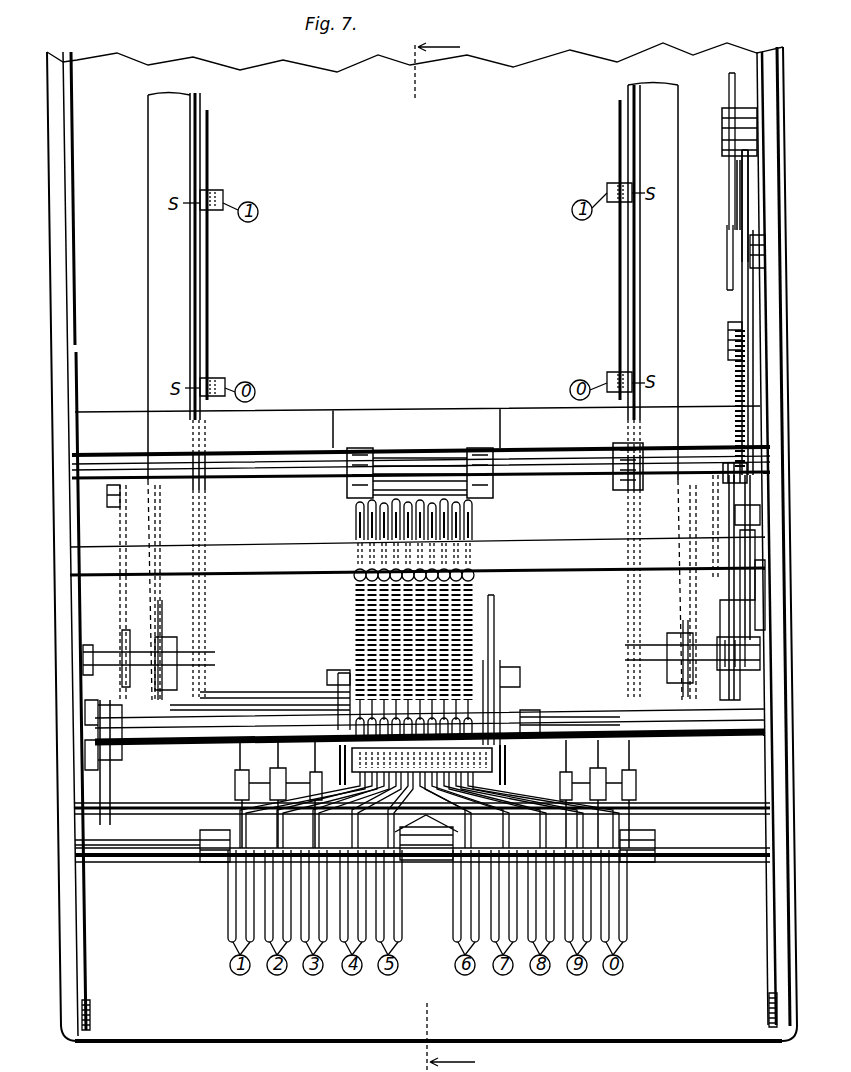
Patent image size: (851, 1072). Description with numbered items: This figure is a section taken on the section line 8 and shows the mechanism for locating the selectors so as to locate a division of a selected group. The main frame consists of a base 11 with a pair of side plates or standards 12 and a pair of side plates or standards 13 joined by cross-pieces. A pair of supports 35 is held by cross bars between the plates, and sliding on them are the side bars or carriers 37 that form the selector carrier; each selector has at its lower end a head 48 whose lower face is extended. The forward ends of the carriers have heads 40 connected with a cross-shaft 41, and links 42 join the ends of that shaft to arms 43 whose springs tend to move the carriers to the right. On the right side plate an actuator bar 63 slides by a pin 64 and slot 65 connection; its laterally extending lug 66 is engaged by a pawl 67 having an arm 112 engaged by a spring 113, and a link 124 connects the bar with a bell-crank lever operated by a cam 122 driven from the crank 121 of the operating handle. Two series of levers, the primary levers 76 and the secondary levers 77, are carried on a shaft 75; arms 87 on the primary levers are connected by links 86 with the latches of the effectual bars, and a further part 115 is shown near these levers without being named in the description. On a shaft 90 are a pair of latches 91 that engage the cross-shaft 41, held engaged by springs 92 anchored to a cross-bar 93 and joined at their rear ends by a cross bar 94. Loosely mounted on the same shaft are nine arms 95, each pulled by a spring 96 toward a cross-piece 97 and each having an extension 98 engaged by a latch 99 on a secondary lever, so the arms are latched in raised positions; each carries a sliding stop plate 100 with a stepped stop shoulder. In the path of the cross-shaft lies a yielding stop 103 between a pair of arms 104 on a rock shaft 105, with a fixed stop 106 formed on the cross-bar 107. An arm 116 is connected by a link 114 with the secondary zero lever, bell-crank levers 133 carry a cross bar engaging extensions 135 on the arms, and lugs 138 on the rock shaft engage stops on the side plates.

The section line 8 is at (452, 555).
The base 11 is at (410, 1027).
The side plates or standards 12 is at (65, 520).
The side plates or standards 13 is at (65, 150).
The supports 35 is at (152, 258).
The side bars or carriers 37 is at (205, 272).
The heads 40 is at (167, 630).
The cross-shaft 41 is at (530, 655).
The links 42 is at (128, 547).
The arms 43 is at (112, 507).
The head 48 is at (209, 150).
The actuator bar 63 is at (729, 90).
The pin 64 is at (730, 228).
The slot 65 is at (725, 130).
The lug 66 is at (762, 252).
The pawl 67 is at (750, 212).
The shaft 75 is at (167, 863).
The primary levers 76 is at (400, 918).
The secondary levers 77 is at (270, 926).
The links 86 is at (240, 783).
The arms 87 is at (262, 778).
The shaft 90 is at (225, 720).
The latches 91 is at (355, 598).
The springs 92 is at (345, 763).
The cross-bar 93 is at (165, 805).
The cross bar 94 is at (520, 702).
The arms 95 is at (360, 525).
The springs 96 is at (348, 620).
The cross-piece 97 is at (310, 548).
The extension 98 is at (453, 862).
The latch 99 is at (225, 873).
The stop plate 100 is at (401, 470).
The yielding stop 103 is at (467, 492).
The arms 104 is at (345, 490).
The rock shaft 105 is at (293, 473).
The fixed stop 106 is at (420, 458).
The cross-bar 107 is at (392, 415).
The arm 112 is at (732, 447).
The spring 113 is at (737, 397).
The link 114 is at (617, 600).
The bracket 115 is at (627, 863).
The arm 116 is at (615, 445).
The crank 121 is at (747, 527).
The cam 122 is at (727, 613).
The link 124 is at (737, 180).
The bell-crank levers 133 is at (345, 690).
The extensions 135 is at (350, 708).
The lugs 138 is at (505, 695).